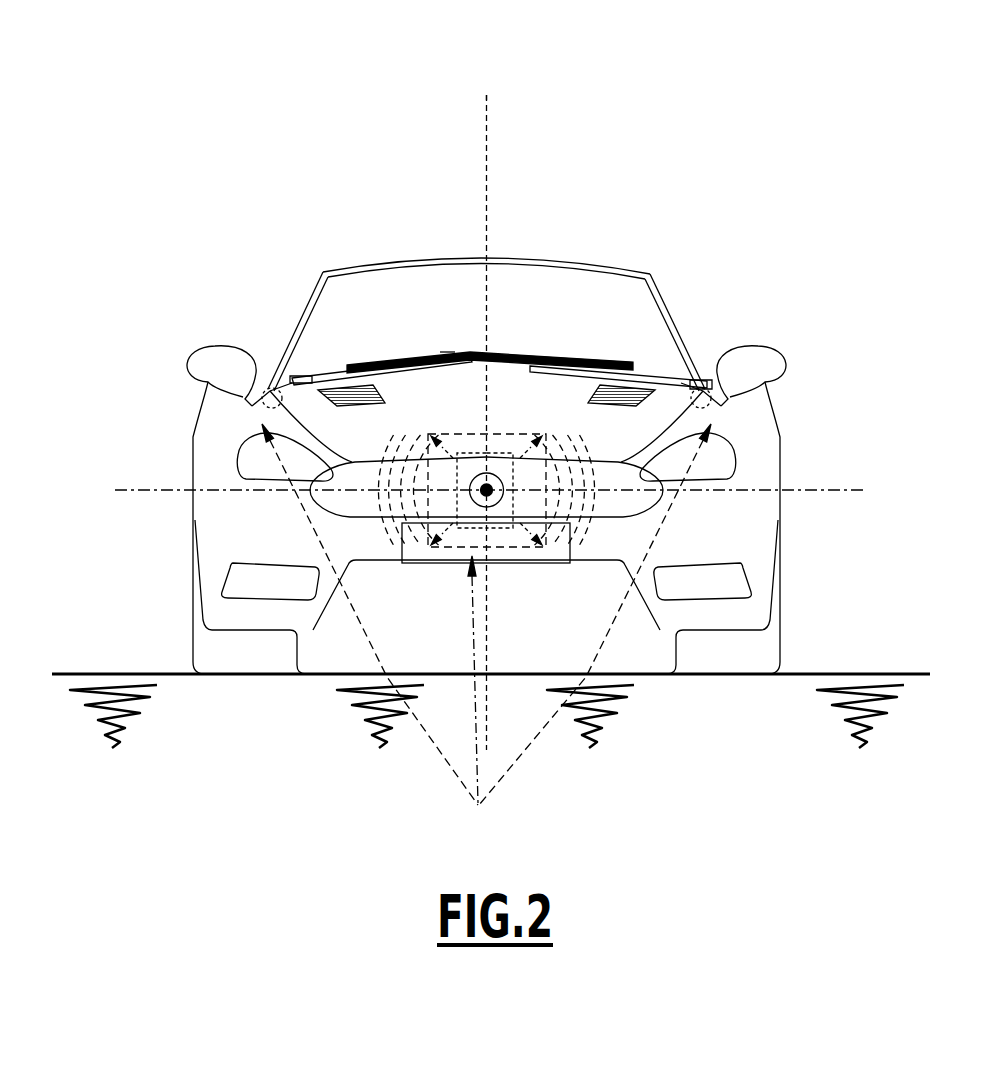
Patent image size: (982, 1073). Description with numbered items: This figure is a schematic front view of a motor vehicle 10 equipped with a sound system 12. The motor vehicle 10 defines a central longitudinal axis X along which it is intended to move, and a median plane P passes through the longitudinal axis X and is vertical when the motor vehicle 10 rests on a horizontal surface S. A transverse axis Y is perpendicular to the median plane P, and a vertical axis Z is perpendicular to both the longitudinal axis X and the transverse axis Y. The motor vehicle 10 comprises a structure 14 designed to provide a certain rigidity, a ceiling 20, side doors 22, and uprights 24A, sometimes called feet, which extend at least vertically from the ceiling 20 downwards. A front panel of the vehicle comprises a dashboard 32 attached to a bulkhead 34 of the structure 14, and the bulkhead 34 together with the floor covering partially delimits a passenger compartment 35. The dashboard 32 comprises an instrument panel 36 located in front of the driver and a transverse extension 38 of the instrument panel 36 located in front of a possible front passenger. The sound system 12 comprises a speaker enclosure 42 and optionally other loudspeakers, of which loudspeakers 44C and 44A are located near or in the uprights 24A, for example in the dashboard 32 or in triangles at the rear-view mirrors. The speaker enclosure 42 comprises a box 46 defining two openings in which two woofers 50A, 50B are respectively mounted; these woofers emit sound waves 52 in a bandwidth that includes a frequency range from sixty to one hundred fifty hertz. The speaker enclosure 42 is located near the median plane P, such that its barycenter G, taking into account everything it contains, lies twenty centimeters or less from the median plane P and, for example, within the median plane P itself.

The motor vehicle 10 is at (485, 341).
The sound system 12 is at (486, 633).
The structure 14 is at (486, 528).
The ceiling 20 is at (581, 258).
The side doors 22 is at (182, 398).
The uprights 24A is at (291, 320).
The dashboard 32 is at (340, 337).
The bulkhead 34 is at (393, 330).
The passenger compartment 35 is at (516, 292).
The instrument panel 36 is at (608, 338).
The transverse extension 38 is at (447, 327).
The speaker enclosure 42 is at (408, 566).
The loudspeaker 44A is at (702, 372).
The loudspeaker 44C is at (270, 372).
The box 46 is at (443, 431).
The woofer 50A is at (510, 429).
The woofer 50B is at (463, 429).
The sound waves 52 is at (585, 452).
The horizontal surface S is at (73, 657).
The longitudinal axis X is at (500, 505).
The transverse axis Y is at (490, 472).
The vertical axis Z is at (474, 420).
The barycenter G is at (472, 505).
The median plane P is at (482, 176).